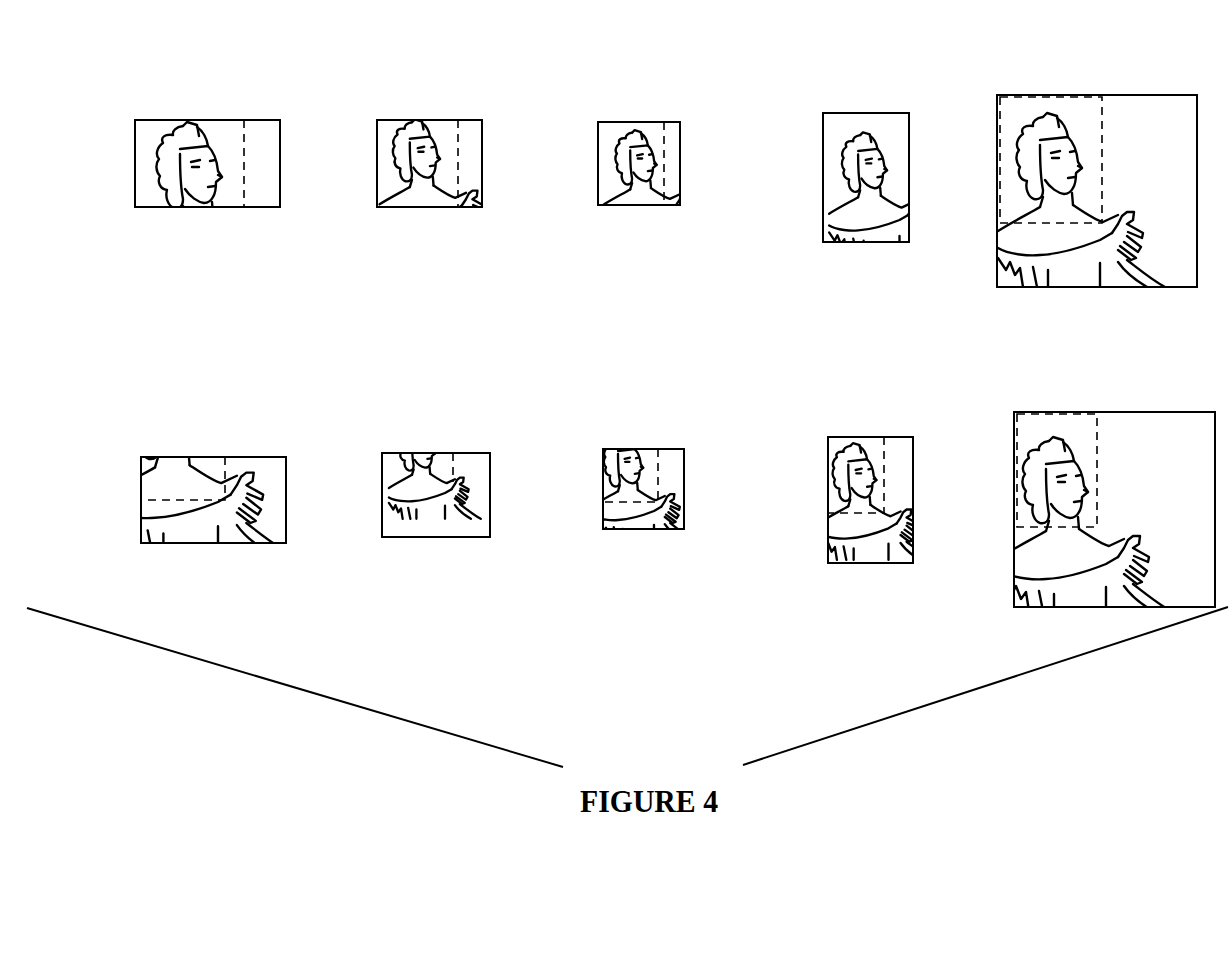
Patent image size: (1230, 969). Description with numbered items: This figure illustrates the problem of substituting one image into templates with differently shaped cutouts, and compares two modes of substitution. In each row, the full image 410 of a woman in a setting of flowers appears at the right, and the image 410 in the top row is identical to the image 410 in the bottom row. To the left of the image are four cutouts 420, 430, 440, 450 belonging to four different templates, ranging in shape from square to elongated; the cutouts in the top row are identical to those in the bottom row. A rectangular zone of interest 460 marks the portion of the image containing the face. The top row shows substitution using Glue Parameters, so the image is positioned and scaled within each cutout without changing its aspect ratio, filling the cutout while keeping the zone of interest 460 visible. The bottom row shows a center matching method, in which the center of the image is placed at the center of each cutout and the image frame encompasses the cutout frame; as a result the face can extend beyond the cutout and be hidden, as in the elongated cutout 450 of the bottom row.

The image 410 is at (1003, 307).
The cutout 420 is at (805, 243).
The cutout 430 is at (620, 222).
The cutout 440 is at (403, 220).
The cutout 450 is at (183, 232).
The zone of interest 460 is at (229, 119).